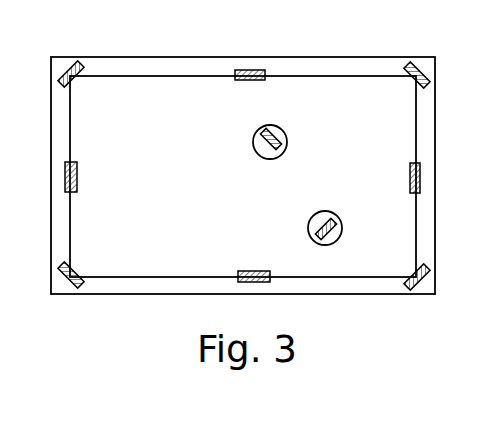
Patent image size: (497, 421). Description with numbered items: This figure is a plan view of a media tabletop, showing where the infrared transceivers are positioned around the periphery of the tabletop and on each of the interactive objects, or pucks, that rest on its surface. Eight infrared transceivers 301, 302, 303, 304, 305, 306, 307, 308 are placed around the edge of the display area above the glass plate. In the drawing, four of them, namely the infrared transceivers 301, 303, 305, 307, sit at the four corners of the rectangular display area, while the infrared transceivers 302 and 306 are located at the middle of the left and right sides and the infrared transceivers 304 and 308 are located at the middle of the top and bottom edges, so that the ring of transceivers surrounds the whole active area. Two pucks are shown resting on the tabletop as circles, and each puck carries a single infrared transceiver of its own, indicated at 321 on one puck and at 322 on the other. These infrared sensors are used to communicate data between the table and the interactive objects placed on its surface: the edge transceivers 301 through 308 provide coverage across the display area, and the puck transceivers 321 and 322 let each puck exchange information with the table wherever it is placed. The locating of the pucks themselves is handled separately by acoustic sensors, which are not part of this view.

The infrared transceiver 301 is at (65, 275).
The infrared transceiver 302 is at (75, 168).
The infrared transceiver 303 is at (80, 68).
The infrared transceiver 304 is at (250, 72).
The infrared transceiver 305 is at (413, 80).
The infrared transceiver 306 is at (408, 172).
The infrared transceiver 307 is at (405, 288).
The infrared transceiver 308 is at (245, 275).
The infrared transceiver 321 is at (283, 130).
The infrared transceiver 322 is at (312, 230).